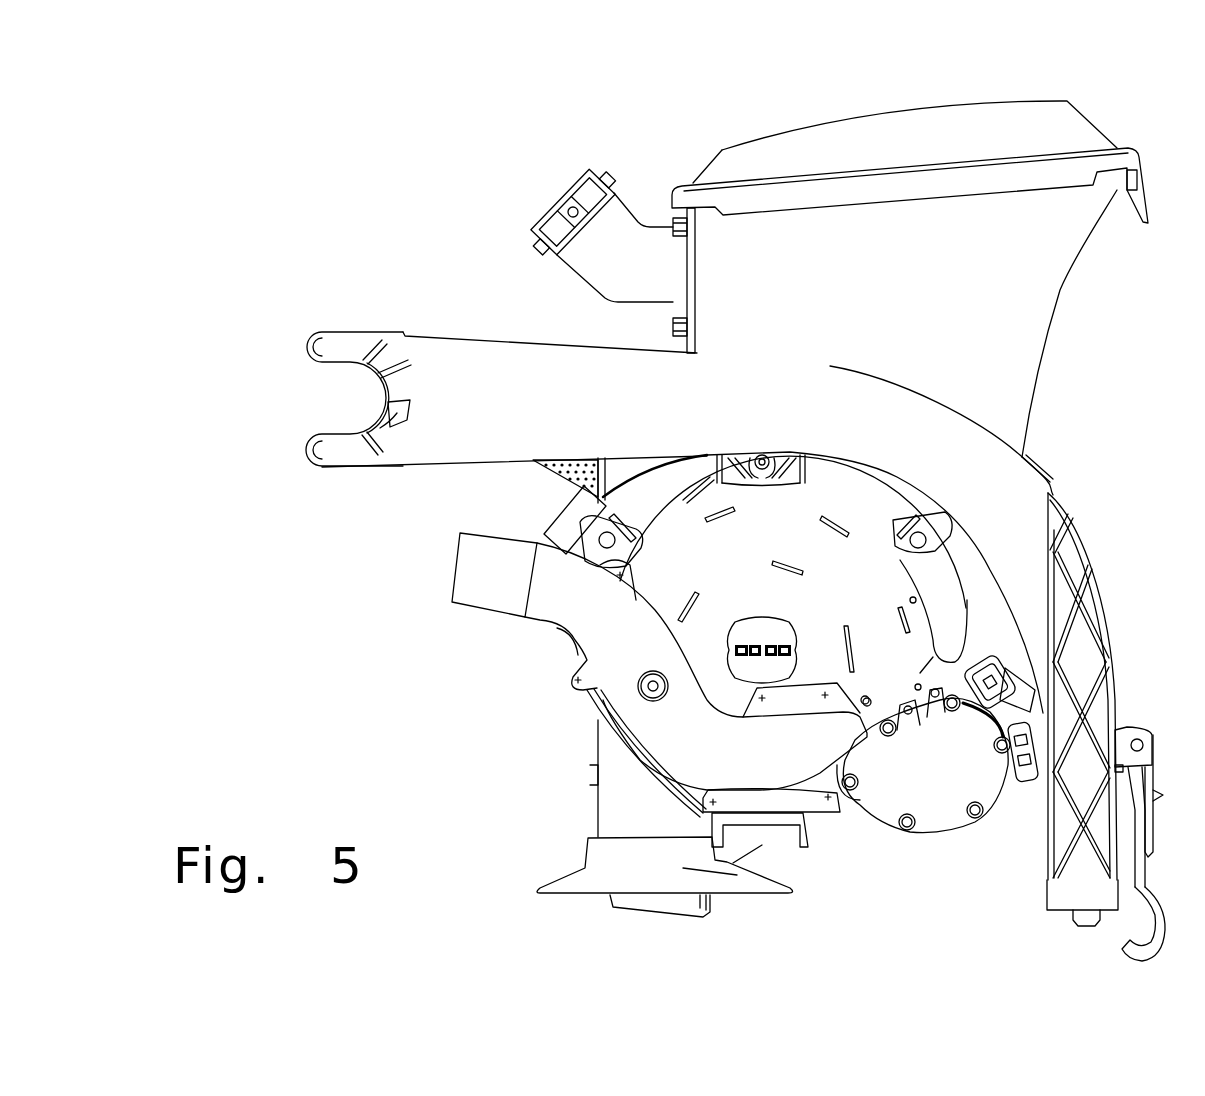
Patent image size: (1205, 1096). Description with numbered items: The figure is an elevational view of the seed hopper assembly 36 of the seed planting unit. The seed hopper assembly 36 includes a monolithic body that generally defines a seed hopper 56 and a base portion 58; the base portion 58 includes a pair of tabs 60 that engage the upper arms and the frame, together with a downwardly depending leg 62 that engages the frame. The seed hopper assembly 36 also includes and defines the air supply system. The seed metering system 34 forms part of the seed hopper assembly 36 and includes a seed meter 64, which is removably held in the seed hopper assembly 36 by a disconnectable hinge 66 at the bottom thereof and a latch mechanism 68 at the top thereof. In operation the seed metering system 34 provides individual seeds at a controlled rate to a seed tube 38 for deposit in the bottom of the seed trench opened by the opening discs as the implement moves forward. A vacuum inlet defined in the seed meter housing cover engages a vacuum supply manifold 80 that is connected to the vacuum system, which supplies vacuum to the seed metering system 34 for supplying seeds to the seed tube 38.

The seed metering system 34 is at (860, 480).
The seed hopper assembly 36 is at (399, 630).
The seed tube 38 is at (600, 812).
The seed hopper 56 is at (1058, 243).
The base portion 58 is at (493, 433).
The tabs 60 is at (335, 338).
The downwardly depending leg 62 is at (1082, 612).
The seed meter 64 is at (893, 565).
The disconnectable hinge 66 is at (800, 840).
The latch mechanism 68 is at (763, 457).
The vacuum supply manifold 80 is at (680, 738).